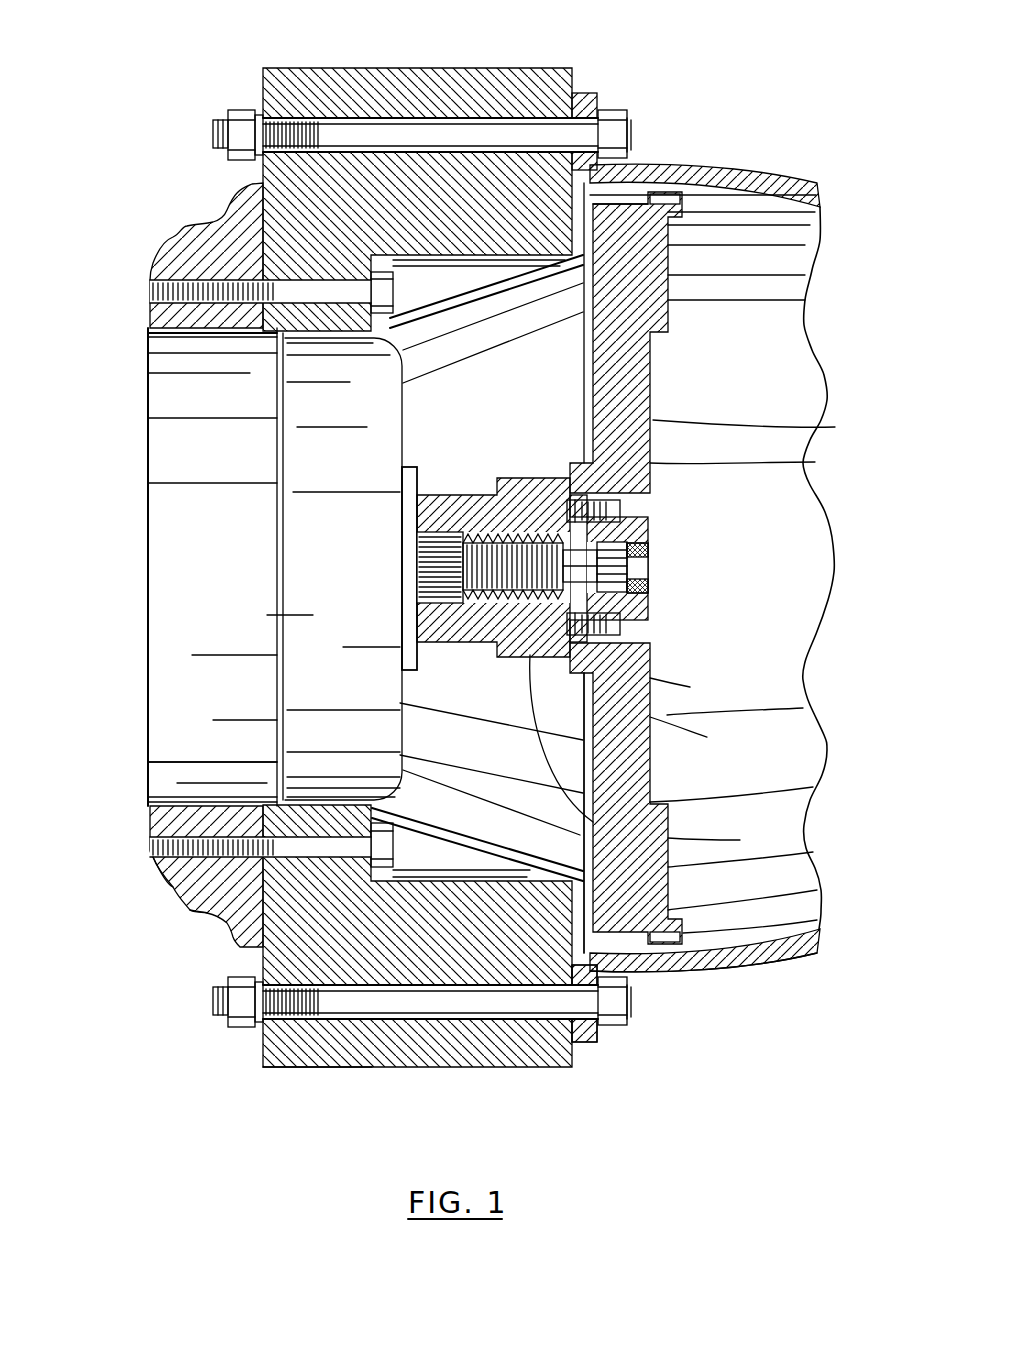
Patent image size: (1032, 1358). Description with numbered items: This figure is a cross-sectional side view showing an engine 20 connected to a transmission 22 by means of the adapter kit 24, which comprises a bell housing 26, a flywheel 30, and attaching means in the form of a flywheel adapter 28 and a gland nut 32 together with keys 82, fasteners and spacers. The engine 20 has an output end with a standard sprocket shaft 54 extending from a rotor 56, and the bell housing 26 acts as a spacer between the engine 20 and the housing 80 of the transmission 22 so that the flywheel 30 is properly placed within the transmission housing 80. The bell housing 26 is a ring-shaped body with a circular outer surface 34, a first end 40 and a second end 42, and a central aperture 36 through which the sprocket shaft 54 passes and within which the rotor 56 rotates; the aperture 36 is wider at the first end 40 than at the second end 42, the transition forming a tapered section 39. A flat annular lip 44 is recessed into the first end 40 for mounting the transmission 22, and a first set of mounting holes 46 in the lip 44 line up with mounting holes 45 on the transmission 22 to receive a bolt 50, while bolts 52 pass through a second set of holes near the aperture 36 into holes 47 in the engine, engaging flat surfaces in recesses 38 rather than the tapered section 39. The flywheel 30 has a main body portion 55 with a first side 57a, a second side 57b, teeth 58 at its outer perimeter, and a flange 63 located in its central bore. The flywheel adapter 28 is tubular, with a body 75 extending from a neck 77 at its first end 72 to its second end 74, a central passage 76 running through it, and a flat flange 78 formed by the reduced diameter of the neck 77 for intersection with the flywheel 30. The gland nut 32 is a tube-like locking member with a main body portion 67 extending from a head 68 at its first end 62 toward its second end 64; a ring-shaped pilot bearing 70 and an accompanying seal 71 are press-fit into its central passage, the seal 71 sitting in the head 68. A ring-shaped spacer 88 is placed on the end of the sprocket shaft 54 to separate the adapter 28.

The engine 20 is at (215, 913).
The transmission 22 is at (856, 905).
The adapter kit 24 is at (507, 53).
The bell housing 26 is at (543, 1068).
The flywheel adapter 28 is at (500, 478).
The flywheel 30 is at (662, 305).
The gland nut 32 is at (652, 498).
The outer surface 34 is at (341, 1068).
The central aperture 36 is at (273, 800).
The recesses 38 is at (500, 278).
The tapered section 39 is at (462, 285).
The first end 40 is at (586, 1066).
The second end 42 is at (257, 1062).
The annular lip 44 is at (637, 967).
The mounting holes 45 is at (600, 1043).
The first set of mounting holes 46 is at (188, 877).
The holes 47 is at (152, 846).
The bolt 50 is at (460, 1020).
The bolts 52 is at (207, 905).
The sprocket shaft 54 is at (417, 568).
The main body portion 55 is at (650, 350).
The rotor 56 is at (273, 615).
The first side 57a is at (676, 237).
The second side 57b is at (647, 195).
The teeth 58 is at (687, 960).
The first end 62 is at (662, 531).
The flange 63 is at (643, 643).
The second end 64 is at (417, 603).
The main body portion 67 is at (417, 520).
The head 68 is at (633, 620).
The pilot bearing 70 is at (613, 572).
The seal 71 is at (648, 593).
The first end 72 is at (690, 687).
The second end 74 is at (400, 628).
The body 75 is at (533, 468).
The central passage 76 is at (835, 427).
The neck 77 is at (815, 462).
The flange 78 is at (707, 737).
The housing 80 is at (790, 956).
The keys 82 is at (740, 840).
The spacer 88 is at (417, 545).